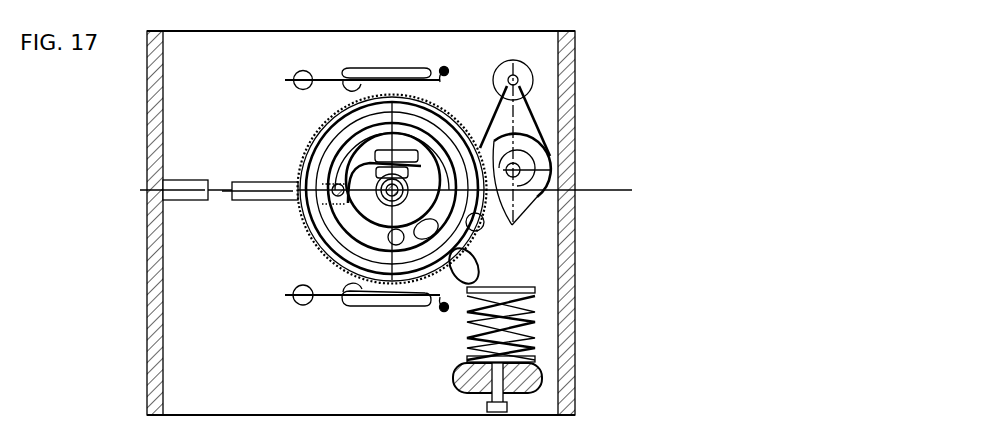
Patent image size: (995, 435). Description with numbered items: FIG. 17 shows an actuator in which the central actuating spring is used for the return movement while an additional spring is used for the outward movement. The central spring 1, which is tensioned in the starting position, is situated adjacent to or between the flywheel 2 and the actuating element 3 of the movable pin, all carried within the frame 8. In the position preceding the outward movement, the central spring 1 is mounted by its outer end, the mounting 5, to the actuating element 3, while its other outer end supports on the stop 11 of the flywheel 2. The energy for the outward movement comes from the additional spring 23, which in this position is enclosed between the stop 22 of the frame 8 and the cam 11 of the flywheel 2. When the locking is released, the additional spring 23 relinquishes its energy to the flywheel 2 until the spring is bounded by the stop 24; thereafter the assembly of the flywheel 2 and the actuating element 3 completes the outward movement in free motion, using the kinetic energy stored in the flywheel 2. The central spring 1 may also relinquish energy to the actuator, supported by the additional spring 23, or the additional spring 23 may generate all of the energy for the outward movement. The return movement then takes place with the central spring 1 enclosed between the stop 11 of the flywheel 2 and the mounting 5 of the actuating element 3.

The frame 8 is at (568, 43).
The flywheel 2 is at (457, 123).
The actuating element 3 is at (442, 145).
The mounting 5 is at (440, 163).
The spring 1 is at (397, 192).
The stop 11 is at (468, 267).
The additional spring 23 is at (513, 312).
The stop 22 is at (520, 382).
The stop 24 is at (498, 405).